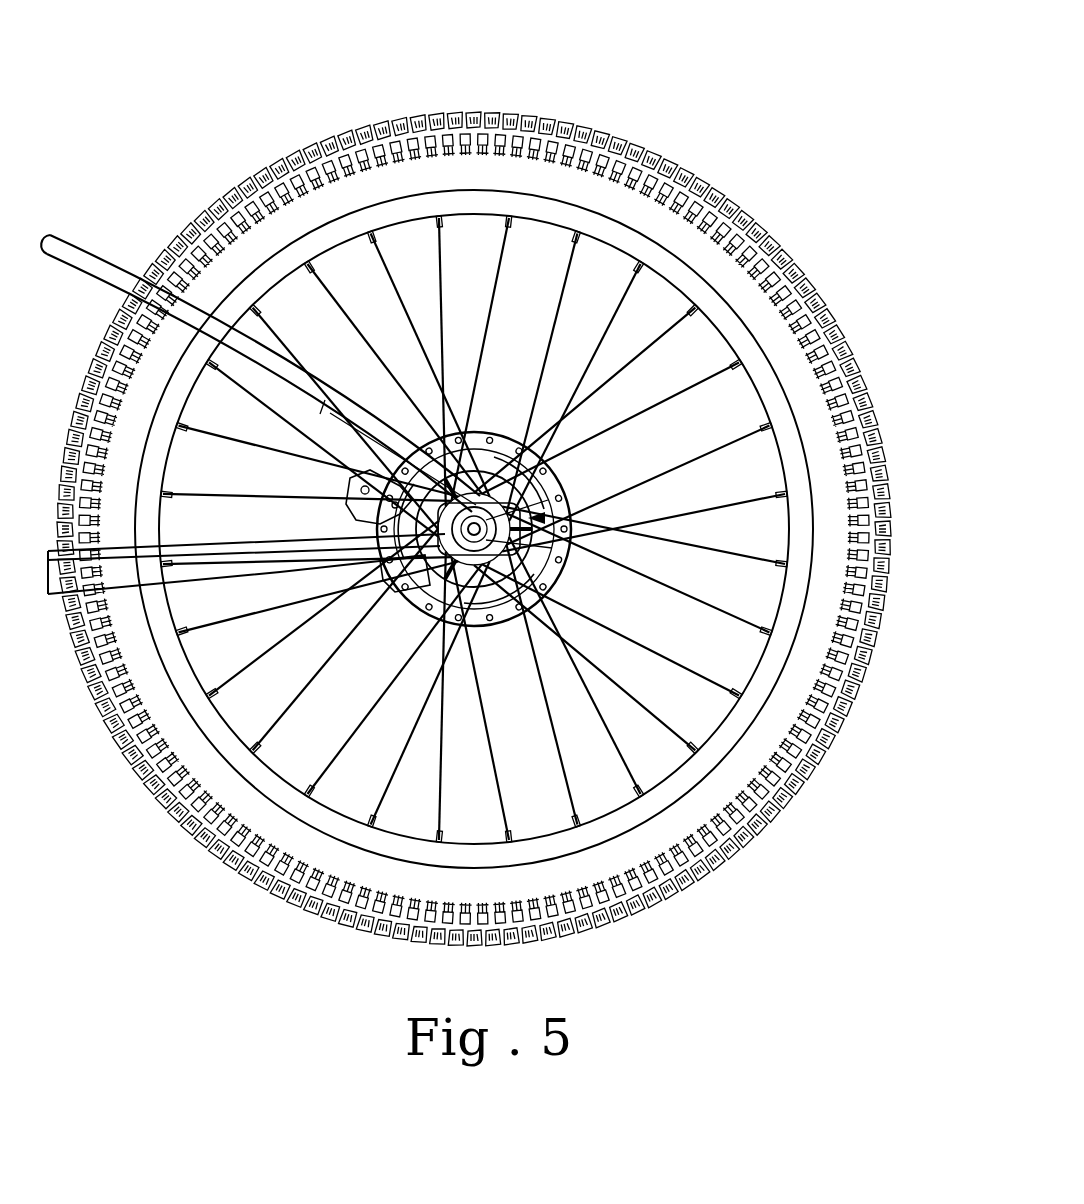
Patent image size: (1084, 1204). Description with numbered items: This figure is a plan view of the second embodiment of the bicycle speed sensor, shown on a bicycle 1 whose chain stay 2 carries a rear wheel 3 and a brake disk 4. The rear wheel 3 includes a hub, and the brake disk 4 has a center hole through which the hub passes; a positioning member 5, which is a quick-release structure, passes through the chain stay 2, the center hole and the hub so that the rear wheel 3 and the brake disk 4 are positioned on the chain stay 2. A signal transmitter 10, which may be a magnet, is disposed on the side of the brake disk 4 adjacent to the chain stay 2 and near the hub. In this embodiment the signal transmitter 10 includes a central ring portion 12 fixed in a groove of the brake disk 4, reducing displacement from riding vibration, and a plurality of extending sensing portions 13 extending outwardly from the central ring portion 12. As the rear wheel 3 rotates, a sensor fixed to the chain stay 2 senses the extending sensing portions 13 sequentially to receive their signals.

The bicycle 1 is at (474, 483).
The chain stay 2 is at (168, 565).
The rear wheel 3 is at (600, 197).
The brake disk 4 is at (542, 478).
The positioning member 5 is at (523, 633).
The signal transmitter 10 is at (500, 510).
The central ring portion 12 is at (540, 565).
The extending sensing portions 13 is at (380, 587).